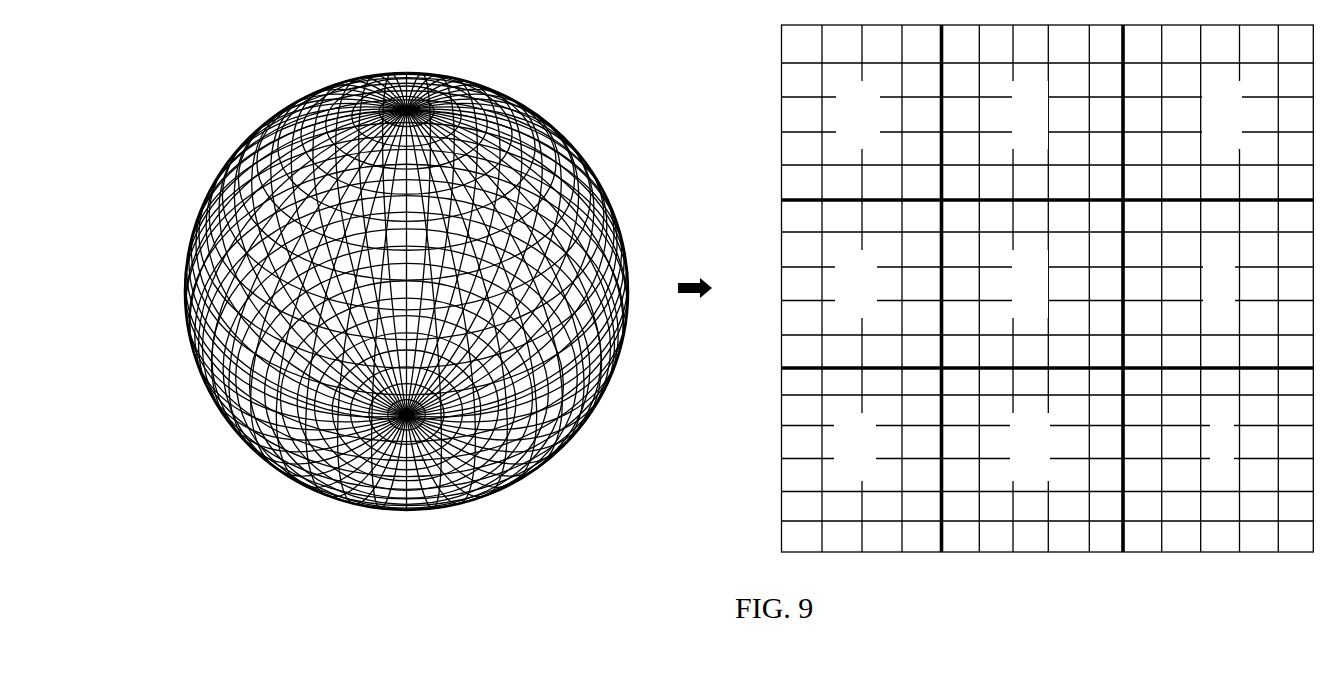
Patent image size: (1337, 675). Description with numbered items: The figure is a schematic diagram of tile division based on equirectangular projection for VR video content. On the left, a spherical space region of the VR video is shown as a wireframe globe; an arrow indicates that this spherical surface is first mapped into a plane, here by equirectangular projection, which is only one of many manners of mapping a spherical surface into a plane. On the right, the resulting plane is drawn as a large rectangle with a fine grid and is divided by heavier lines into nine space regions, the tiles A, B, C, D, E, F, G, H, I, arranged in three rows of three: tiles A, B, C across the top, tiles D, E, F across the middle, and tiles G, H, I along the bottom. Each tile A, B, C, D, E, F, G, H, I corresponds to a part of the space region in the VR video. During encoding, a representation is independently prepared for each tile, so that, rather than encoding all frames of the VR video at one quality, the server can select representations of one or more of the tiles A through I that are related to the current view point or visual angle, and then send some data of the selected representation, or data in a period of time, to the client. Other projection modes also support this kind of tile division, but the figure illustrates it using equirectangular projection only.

The tile A is at (862, 112).
The tile B is at (1033, 112).
The tile C is at (1218, 112).
The tile D is at (862, 284).
The tile E is at (1033, 284).
The tile F is at (1218, 284).
The tile G is at (862, 460).
The tile H is at (1033, 460).
The tile I is at (1218, 460).